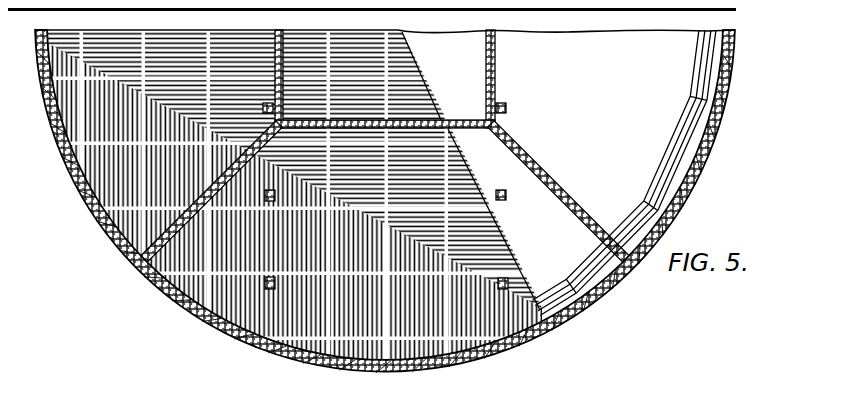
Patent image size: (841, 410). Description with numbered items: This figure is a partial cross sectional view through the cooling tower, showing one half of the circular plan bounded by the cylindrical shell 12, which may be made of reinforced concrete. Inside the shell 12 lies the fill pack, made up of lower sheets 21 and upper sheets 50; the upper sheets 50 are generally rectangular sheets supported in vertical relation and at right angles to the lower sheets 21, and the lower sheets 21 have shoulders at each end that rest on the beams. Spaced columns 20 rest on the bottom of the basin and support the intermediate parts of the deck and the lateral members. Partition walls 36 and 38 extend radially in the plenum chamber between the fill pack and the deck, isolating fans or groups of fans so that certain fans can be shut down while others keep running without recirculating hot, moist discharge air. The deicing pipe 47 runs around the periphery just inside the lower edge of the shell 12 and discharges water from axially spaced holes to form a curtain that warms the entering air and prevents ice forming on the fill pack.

The cylindrical shell 12 is at (101, 231).
The columns 20 is at (499, 190).
The lower sheets 21 is at (394, 42).
The partition wall 36 is at (487, 47).
The partition wall 38 is at (507, 148).
The deicing pipe 47 is at (662, 150).
The upper sheets 50 is at (145, 102).